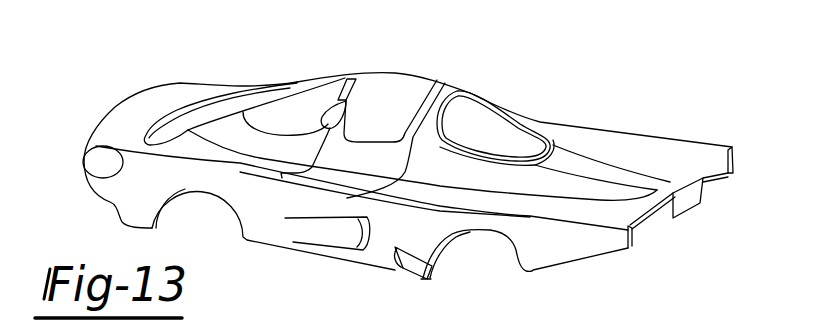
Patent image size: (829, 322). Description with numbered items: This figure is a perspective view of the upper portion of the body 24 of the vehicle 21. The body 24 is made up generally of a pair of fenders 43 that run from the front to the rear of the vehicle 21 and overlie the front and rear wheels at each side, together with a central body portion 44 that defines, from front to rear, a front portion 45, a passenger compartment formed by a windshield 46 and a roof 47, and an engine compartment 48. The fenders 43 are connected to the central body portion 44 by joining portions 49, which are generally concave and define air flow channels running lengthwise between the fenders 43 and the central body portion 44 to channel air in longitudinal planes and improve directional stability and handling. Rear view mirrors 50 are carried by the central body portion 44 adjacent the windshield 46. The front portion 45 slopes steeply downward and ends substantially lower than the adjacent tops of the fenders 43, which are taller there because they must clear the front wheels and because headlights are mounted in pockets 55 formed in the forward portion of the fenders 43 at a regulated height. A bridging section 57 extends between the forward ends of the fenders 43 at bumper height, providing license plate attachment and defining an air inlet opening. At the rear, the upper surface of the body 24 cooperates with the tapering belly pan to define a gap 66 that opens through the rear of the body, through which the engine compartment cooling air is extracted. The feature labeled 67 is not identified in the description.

The vehicle 21 is at (612, 125).
The body 24 is at (673, 157).
The fenders 43 is at (253, 222).
The central body portion 44 is at (459, 83).
The front portion 45 is at (168, 133).
The windshield 46 is at (297, 107).
The roof 47 is at (427, 82).
The engine compartment 48 is at (581, 148).
The joining portions 49 is at (647, 147).
The rear view mirrors 50 is at (345, 98).
The headlight pockets 55 is at (100, 167).
The bridging section 57 is at (180, 95).
The gap 66 is at (702, 192).
The side window opening 67 is at (483, 128).